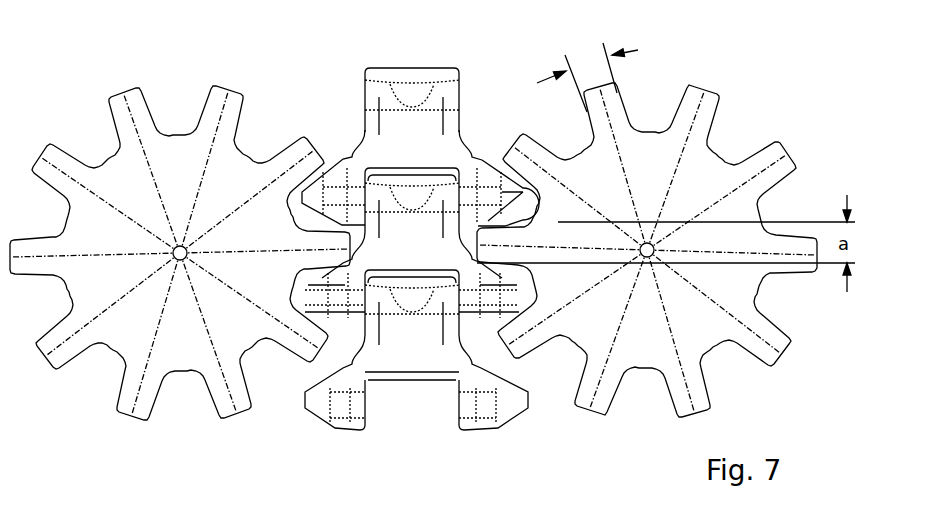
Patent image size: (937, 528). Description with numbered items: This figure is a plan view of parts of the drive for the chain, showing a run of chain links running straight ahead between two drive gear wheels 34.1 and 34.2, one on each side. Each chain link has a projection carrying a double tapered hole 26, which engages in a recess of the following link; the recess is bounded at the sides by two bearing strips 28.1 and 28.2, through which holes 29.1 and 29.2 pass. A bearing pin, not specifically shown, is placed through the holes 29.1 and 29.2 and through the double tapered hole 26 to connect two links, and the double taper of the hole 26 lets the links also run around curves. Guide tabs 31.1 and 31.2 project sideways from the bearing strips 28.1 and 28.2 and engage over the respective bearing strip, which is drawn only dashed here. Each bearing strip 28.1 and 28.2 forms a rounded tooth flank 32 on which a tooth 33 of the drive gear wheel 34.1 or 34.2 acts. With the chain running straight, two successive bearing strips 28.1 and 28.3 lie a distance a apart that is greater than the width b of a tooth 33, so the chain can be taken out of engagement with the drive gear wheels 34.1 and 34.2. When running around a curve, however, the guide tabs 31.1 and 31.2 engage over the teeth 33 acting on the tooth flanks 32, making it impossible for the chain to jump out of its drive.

The double tapered hole 26 is at (425, 317).
The bearing strip 28.1 is at (505, 273).
The bearing strip 28.2 is at (328, 293).
The bearing strip 28.3 is at (498, 192).
The hole 29.1 is at (490, 306).
The hole 29.2 is at (343, 310).
The guide tab 31.1 is at (513, 295).
The guide tab 31.2 is at (323, 283).
The rounded tooth flank 32 is at (482, 157).
The tooth 33 is at (538, 158).
The drive gear wheel 34.1 is at (721, 148).
The drive gear wheel 34.2 is at (250, 148).